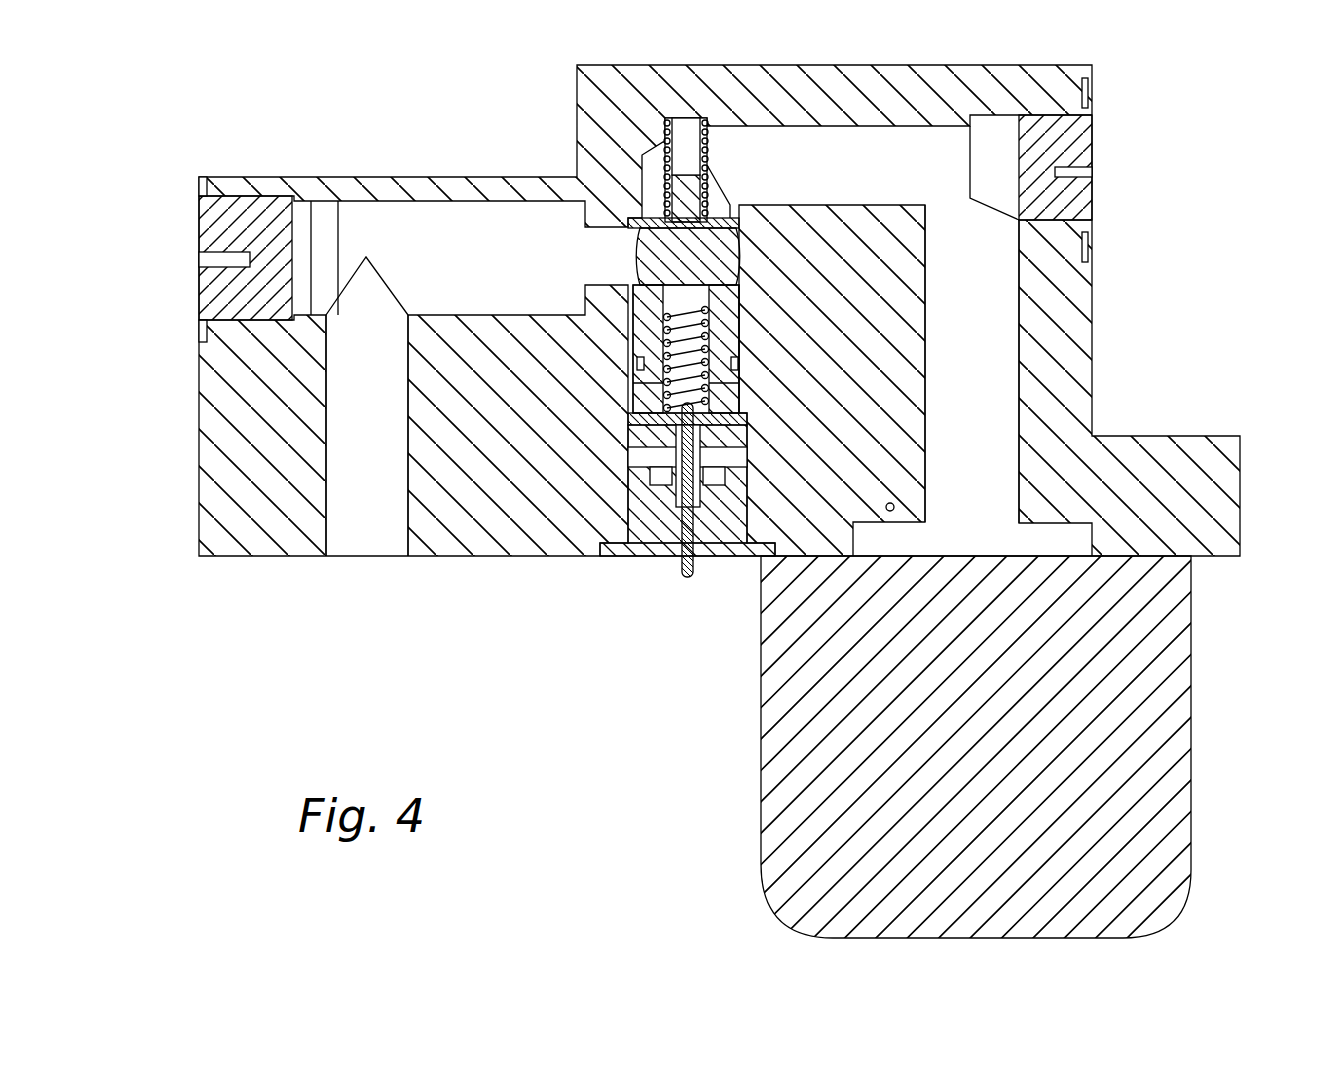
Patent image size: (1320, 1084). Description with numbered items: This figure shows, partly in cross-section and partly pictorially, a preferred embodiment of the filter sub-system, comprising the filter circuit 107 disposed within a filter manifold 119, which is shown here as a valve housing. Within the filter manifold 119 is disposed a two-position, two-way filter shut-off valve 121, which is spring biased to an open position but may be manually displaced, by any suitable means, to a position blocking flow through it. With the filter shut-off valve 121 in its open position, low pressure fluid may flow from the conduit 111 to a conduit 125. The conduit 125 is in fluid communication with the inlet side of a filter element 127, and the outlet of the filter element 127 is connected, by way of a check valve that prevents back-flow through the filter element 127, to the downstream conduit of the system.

The filter circuit 107 is at (1196, 167).
The conduit 111 is at (366, 520).
The filter manifold 119 is at (199, 408).
The filter shut-off valve 121 is at (598, 413).
The conduit 125 is at (978, 352).
The filter element 127 is at (1195, 628).